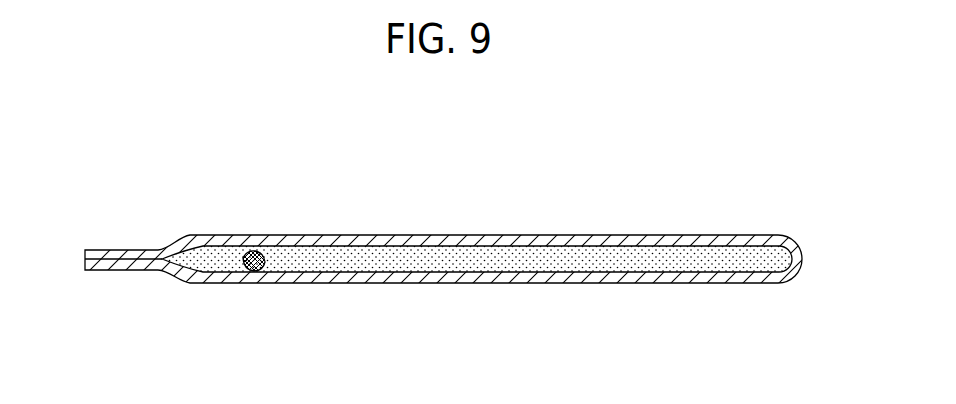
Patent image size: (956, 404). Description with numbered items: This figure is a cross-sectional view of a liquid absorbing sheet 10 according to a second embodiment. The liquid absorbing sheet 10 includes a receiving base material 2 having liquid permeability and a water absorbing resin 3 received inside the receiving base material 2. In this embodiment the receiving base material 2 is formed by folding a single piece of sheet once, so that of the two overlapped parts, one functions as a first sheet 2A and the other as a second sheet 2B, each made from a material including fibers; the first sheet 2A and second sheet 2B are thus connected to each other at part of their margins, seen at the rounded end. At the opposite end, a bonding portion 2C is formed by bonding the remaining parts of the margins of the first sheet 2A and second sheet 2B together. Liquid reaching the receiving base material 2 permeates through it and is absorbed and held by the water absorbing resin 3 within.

The liquid absorbing sheet 10 is at (518, 176).
The receiving base material 2 is at (622, 235).
The first sheet 2A is at (463, 235).
The second sheet 2B is at (459, 284).
The bonding portion 2C is at (113, 249).
The water absorbing resin 3 is at (318, 262).